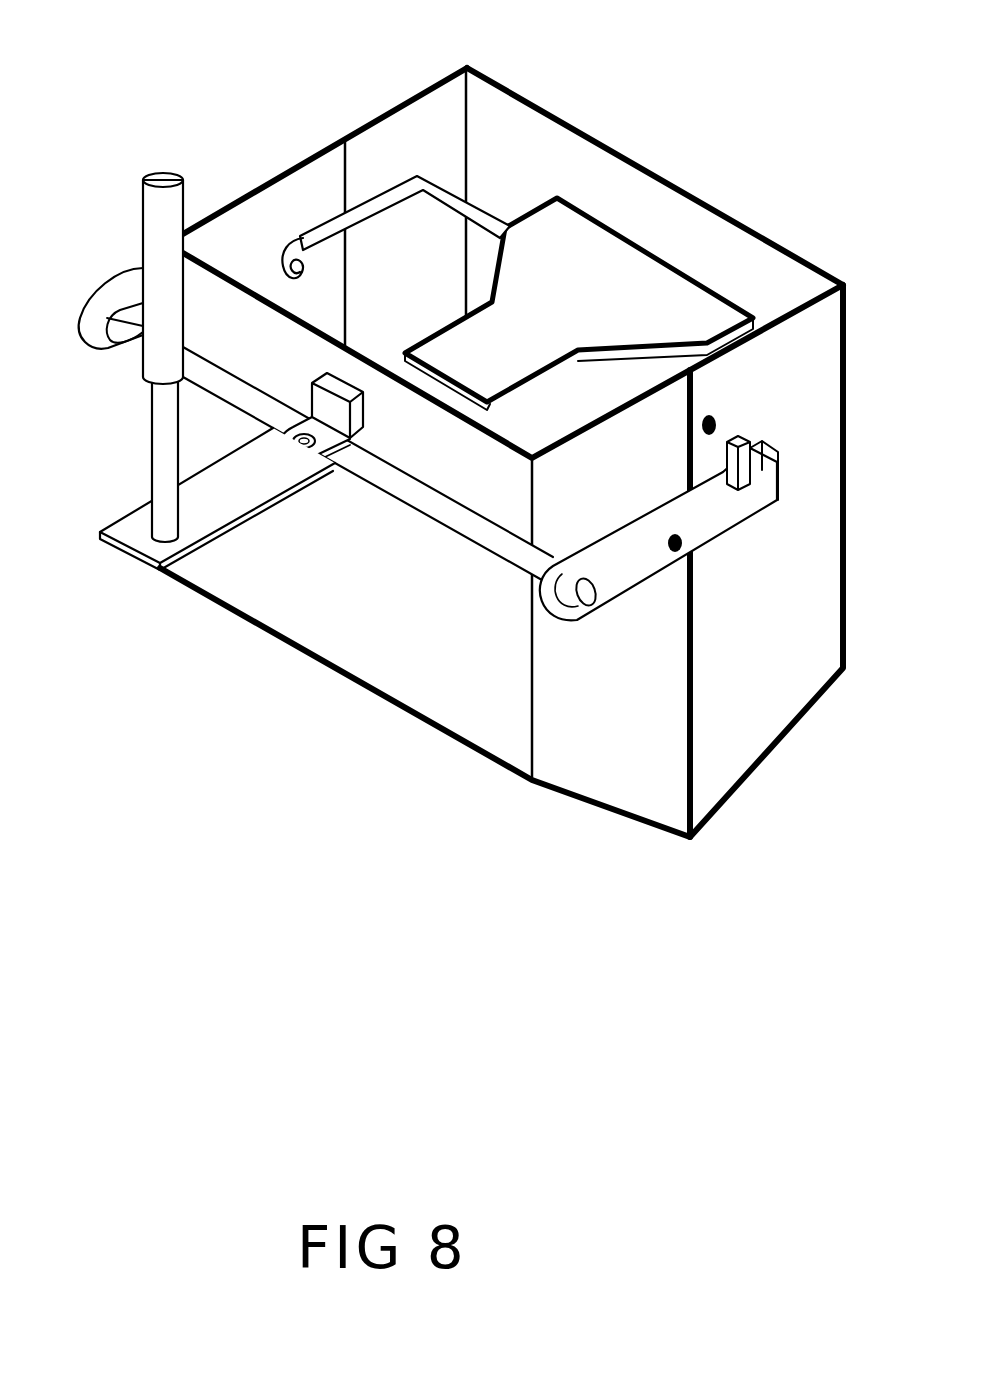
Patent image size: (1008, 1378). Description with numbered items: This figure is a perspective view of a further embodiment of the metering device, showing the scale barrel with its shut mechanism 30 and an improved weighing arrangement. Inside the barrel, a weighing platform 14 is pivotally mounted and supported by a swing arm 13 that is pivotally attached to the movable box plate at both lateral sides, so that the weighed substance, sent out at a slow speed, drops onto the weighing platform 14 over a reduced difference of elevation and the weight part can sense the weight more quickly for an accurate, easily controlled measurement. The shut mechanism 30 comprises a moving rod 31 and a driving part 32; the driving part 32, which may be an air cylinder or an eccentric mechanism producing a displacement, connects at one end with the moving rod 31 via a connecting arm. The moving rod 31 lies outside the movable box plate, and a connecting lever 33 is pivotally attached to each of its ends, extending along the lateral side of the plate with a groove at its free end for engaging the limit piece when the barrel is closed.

The swing arm 13 is at (455, 205).
The weighing platform 14 is at (542, 303).
The shut mechanism 30 is at (119, 281).
The moving rod 31 is at (428, 498).
The driving part 32 is at (175, 198).
The connecting lever 33 is at (733, 518).